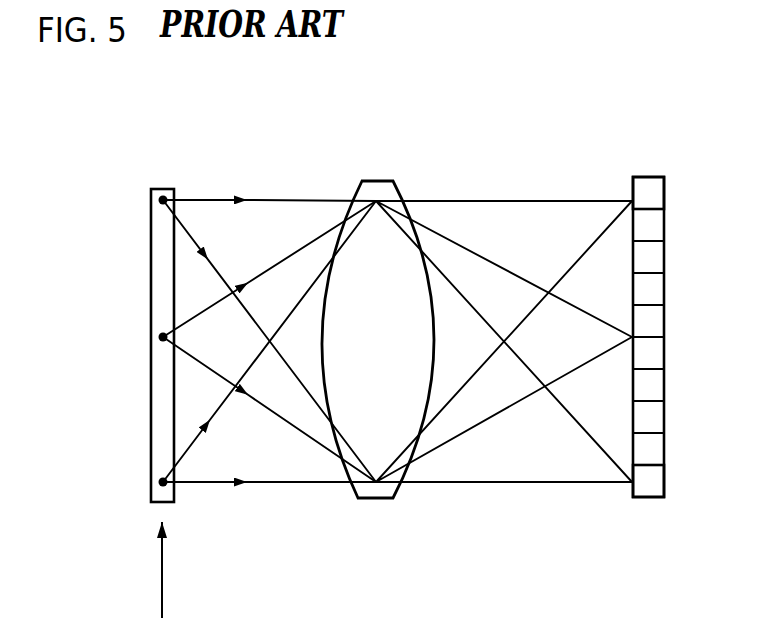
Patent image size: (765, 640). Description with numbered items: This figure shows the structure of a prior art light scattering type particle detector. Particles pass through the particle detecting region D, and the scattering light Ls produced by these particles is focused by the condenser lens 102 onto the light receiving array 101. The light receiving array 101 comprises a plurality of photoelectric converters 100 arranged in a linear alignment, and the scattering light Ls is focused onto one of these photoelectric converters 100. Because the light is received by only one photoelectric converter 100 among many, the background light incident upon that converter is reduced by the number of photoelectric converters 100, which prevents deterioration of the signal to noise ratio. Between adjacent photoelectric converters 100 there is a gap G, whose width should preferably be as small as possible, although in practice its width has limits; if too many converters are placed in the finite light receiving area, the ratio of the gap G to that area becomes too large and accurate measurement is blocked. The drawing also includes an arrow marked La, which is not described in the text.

The particle detecting region D is at (160, 266).
The scattering light Ls is at (313, 244).
The condenser lens 102 is at (395, 181).
The gap G is at (665, 302).
The light receiving array 101 is at (651, 177).
The photoelectric converter 100 is at (640, 496).
The arrangement direction of light sources La is at (162, 581).